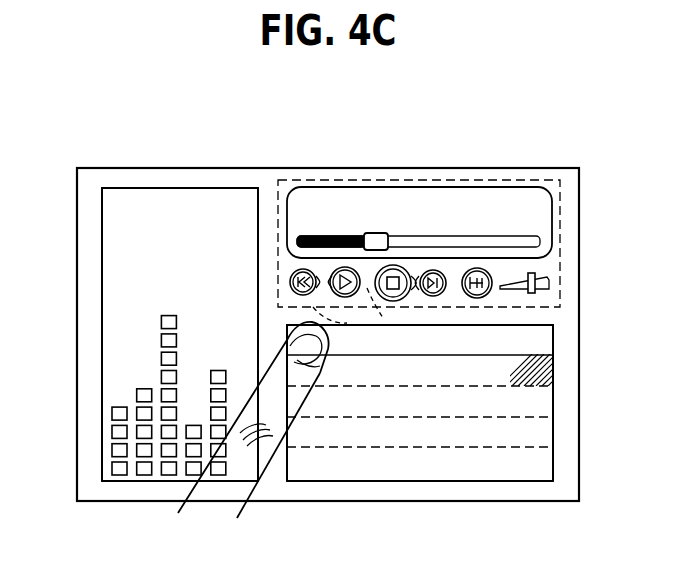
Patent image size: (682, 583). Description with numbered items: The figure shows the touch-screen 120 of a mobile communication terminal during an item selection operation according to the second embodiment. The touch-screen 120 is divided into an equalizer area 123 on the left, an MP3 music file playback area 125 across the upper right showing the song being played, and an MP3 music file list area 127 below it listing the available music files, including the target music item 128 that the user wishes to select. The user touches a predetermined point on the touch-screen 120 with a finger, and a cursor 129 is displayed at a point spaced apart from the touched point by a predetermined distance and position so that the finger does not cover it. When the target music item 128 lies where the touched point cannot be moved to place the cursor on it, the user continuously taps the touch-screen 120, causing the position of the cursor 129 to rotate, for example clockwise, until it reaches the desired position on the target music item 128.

The touch-screen 120 is at (222, 168).
The equalizer area 123 is at (102, 372).
The MP3 music file playback area 125 is at (522, 180).
The MP3 music file list area 127 is at (553, 341).
The target music item 128 is at (362, 481).
The cursor 129 is at (374, 358).